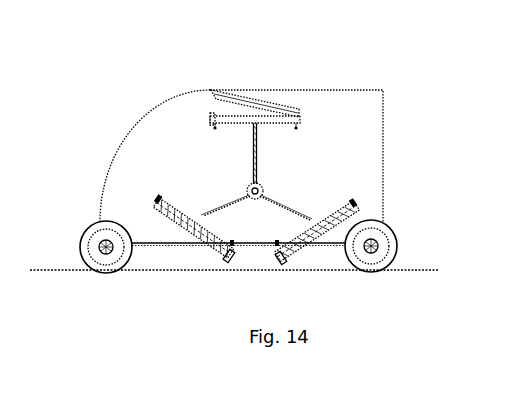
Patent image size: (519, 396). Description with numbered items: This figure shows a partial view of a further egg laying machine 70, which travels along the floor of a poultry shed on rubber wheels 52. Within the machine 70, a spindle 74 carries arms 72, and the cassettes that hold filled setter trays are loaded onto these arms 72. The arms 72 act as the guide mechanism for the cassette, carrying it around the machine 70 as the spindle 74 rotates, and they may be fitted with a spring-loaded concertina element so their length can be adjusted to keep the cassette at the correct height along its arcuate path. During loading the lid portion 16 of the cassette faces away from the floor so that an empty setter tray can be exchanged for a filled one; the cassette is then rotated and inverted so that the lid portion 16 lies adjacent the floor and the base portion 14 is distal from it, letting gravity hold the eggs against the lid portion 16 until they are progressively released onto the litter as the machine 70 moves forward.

The egg laying machine 70 is at (418, 148).
The spindle 74 is at (263, 192).
The base portion 14 is at (235, 122).
The lid portion 16 is at (257, 101).
The arms 72 is at (233, 203).
The rubber wheels 52 is at (97, 258).